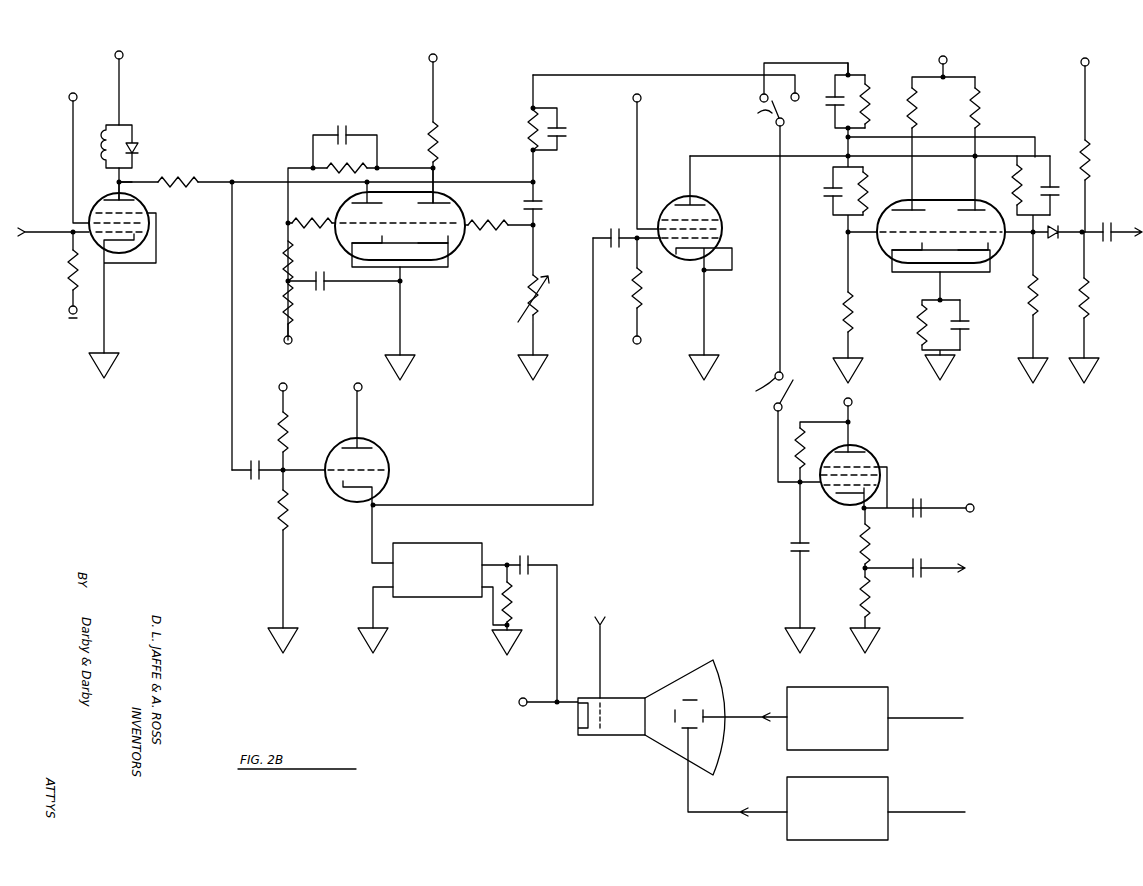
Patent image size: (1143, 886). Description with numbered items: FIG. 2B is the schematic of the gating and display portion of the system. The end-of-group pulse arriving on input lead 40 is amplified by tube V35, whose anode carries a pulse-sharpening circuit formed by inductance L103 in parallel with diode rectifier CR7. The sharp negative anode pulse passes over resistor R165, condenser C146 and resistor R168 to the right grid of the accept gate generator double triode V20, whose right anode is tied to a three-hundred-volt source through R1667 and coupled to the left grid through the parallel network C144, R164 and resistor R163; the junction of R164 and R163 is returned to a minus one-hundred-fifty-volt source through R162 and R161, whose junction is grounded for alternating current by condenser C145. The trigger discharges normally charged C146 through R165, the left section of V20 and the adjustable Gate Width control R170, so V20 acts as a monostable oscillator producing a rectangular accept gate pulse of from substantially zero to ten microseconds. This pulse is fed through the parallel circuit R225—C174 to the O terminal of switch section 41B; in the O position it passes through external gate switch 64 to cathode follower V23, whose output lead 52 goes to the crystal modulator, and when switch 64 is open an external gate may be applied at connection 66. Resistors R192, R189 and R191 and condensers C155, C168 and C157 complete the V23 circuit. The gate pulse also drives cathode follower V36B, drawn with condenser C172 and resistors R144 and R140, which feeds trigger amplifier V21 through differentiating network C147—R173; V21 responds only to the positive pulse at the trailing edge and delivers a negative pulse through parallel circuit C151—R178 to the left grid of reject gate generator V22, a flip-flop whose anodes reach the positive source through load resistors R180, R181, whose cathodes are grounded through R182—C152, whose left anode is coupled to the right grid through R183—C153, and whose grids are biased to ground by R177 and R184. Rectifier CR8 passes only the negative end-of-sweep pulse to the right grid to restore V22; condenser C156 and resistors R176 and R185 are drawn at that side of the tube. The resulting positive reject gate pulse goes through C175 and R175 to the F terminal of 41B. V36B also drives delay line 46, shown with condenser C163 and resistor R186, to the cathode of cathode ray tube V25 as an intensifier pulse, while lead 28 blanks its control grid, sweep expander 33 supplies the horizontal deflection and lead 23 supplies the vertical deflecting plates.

The input signal line 40 is at (53, 224).
The amplifier V35 is at (122, 229).
The resistor R225 is at (51, 275).
The inductance L103 is at (115, 109).
The diode rectifier CR7 is at (141, 160).
The resistor R165 is at (175, 171).
The resistor R164 is at (360, 245).
The condenser C144 is at (345, 130).
The resistor R1667 is at (423, 127).
The accept gate generator V20 is at (416, 274).
The resistor R163 is at (311, 221).
The resistor R162 is at (268, 262).
The resistor R161 is at (280, 315).
The condenser C145 is at (344, 293).
The resistor R168 is at (499, 239).
The condenser C174 is at (567, 129).
The condenser C146 is at (550, 205).
The Gate Width control R170 is at (549, 302).
The condenser C147 is at (627, 237).
The resistor R173 is at (656, 292).
The trigger amplifier tube V21 is at (694, 236).
The switch section 41B is at (769, 229).
The external gate switch 64 is at (776, 428).
The condenser C175 is at (829, 109).
The resistor R175 is at (881, 101).
The load resistor R180 is at (941, 131).
The load resistor R181 is at (992, 143).
The reject gate generator V22 is at (940, 280).
The condenser C151 is at (827, 195).
The resistor R178 is at (879, 191).
The resistor R177 is at (830, 307).
The resistor R182 is at (918, 327).
The condenser C152 is at (974, 325).
The resistor R183 is at (1014, 195).
The condenser C153 is at (1062, 189).
The resistor R184 is at (1020, 307).
The rectifier CR8 is at (1059, 243).
The capacitor C156 is at (1112, 249).
The resistor R176 is at (1102, 144).
The resistor R185 is at (1096, 307).
The capacitor C172 is at (259, 466).
The resistor R144 is at (303, 424).
The resistor R140 is at (298, 561).
The cathode follower tube V36B is at (357, 470).
The delay line 46 is at (413, 597).
The capacitor C163 is at (521, 617).
The resistor R186 is at (514, 610).
The cathode ray tube V25 is at (646, 738).
The lead 28 is at (603, 660).
The sweep expander circuit 33 is at (925, 718).
The lead 23 is at (912, 812).
The resistor R192 is at (789, 451).
The cathode follower V23 is at (897, 452).
The capacitor C155 is at (781, 567).
The resistor R189 is at (845, 539).
The resistor R191 is at (850, 610).
The capacitor C168 is at (914, 509).
The connection 66 is at (955, 508).
The capacitor C157 is at (915, 586).
The lead 52 is at (935, 568).